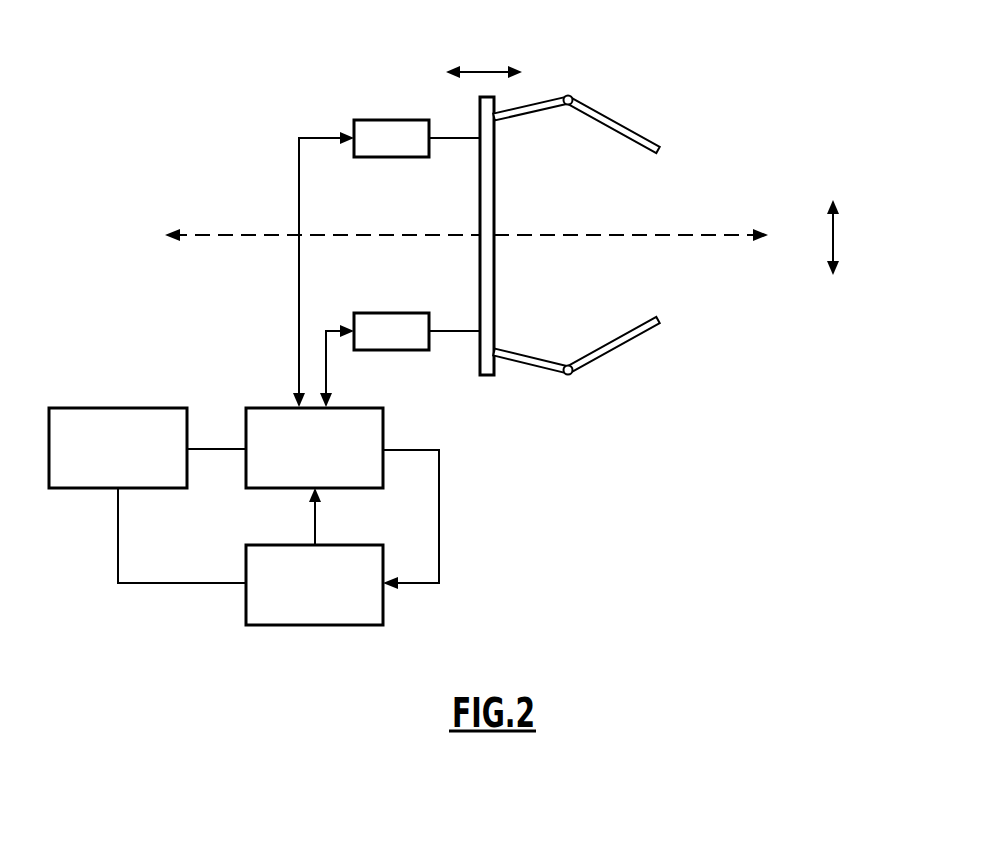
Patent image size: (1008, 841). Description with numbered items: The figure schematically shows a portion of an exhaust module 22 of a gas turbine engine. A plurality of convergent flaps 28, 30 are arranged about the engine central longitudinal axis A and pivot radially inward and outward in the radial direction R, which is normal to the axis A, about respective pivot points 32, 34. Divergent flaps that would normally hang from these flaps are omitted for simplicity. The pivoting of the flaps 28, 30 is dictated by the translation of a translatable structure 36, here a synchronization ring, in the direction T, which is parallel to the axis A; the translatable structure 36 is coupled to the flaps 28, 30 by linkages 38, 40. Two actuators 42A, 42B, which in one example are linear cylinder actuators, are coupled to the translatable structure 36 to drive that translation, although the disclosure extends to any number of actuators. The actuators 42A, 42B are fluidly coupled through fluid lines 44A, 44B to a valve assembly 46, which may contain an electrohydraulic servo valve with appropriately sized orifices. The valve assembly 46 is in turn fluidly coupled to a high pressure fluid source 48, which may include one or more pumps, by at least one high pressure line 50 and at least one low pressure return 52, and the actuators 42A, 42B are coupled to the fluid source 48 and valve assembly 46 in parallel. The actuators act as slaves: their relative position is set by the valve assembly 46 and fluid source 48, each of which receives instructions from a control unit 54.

The exhaust module 22 is at (777, 76).
The convergent flap 28 is at (640, 135).
The convergent flap 30 is at (640, 333).
The pivot point 32 is at (572, 97).
The pivot point 34 is at (575, 375).
The translatable structure 36 is at (490, 188).
The linkage 38 is at (540, 105).
The linkage 40 is at (540, 363).
The actuator 42A is at (373, 110).
The actuator 42B is at (373, 303).
The fluid line 44A is at (299, 168).
The fluid line 44B is at (326, 368).
The valve assembly 46 is at (385, 430).
The high pressure fluid source 48 is at (352, 545).
The high pressure line 50 is at (312, 522).
The low pressure return 52 is at (440, 507).
The control unit 54 is at (108, 407).
The engine central longitudinal axis A is at (228, 235).
The translation direction T is at (485, 72).
The radial direction R is at (833, 235).